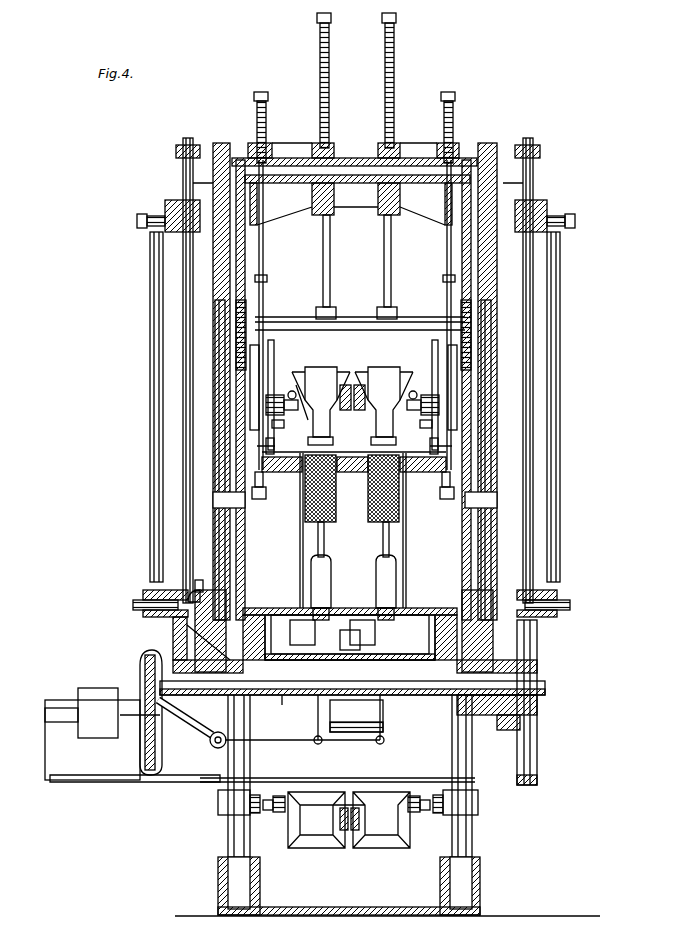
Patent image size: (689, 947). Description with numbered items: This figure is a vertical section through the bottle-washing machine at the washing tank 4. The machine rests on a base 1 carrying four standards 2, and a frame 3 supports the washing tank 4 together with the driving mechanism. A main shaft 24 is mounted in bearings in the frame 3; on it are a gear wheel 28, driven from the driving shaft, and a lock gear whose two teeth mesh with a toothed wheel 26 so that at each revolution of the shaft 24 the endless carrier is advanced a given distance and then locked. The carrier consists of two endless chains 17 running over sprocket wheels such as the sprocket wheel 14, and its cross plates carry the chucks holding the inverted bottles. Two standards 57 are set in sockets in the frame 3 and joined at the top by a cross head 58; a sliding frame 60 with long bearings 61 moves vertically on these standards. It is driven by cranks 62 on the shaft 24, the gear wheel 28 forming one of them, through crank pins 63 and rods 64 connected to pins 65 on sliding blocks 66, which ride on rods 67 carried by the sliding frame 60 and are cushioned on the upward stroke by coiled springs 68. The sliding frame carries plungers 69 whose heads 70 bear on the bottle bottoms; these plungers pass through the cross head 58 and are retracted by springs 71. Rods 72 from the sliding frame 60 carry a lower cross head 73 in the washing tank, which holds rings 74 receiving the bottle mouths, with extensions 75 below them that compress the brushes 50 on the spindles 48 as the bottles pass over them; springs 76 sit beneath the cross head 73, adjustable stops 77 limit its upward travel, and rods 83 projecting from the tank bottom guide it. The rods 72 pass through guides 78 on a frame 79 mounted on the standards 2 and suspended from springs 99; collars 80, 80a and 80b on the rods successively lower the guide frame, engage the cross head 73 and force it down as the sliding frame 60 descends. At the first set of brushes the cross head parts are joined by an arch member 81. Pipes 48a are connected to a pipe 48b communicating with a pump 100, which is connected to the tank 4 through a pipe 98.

The base 1 is at (480, 875).
The standard 2 is at (250, 365).
The frame 3 is at (355, 640).
The washing tank 4 is at (344, 614).
The sprocket wheel 14 is at (278, 710).
The endless chain 17 is at (285, 800).
The main shaft 24 is at (537, 688).
The wheel 26 is at (503, 730).
The gear wheel 28 is at (537, 775).
The spindle 48 is at (329, 590).
The pipe 48a is at (383, 718).
The pipe 48b is at (212, 738).
The brush 50 is at (330, 522).
The standard 57 is at (215, 483).
The cross head 58 is at (308, 150).
The sliding frame 60 is at (357, 200).
The bearing 61 is at (213, 272).
The crank 62 is at (173, 625).
The crank pin 63 is at (133, 605).
The rod 64 is at (150, 386).
The pin 65 is at (137, 216).
The sliding block 66 is at (165, 212).
The rod 67 is at (183, 290).
The coiled spring 68 is at (183, 176).
The plunger 69 is at (330, 268).
The head 70 is at (336, 313).
The spring 71 is at (334, 72).
The rod 72 is at (460, 325).
The cross head 73 is at (263, 480).
The ring 74 is at (355, 450).
The extension 75 is at (305, 503).
The spring 76 is at (260, 499).
The adjustable stop 77 is at (352, 445).
The guide 78 is at (270, 395).
The frame 79 is at (271, 365).
The collar 80 is at (355, 428).
The collar 80a is at (257, 446).
The collar 80b is at (264, 280).
The arch member 81 is at (258, 118).
The rod 83 is at (300, 573).
The pipe 98 is at (203, 580).
The spring 99 is at (236, 352).
The pump 100 is at (142, 690).